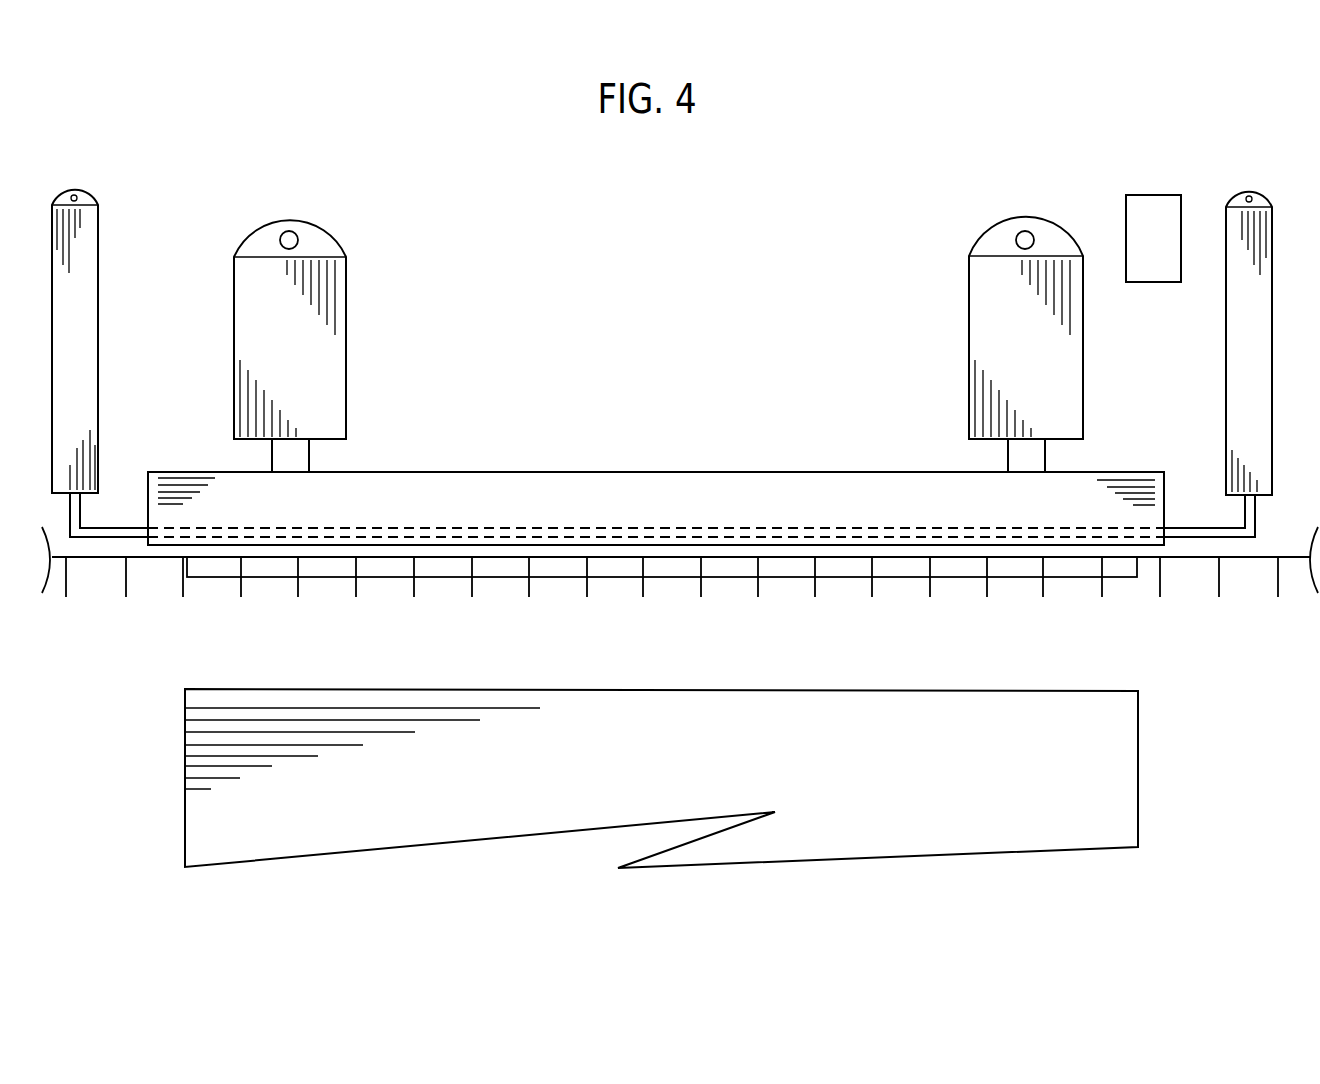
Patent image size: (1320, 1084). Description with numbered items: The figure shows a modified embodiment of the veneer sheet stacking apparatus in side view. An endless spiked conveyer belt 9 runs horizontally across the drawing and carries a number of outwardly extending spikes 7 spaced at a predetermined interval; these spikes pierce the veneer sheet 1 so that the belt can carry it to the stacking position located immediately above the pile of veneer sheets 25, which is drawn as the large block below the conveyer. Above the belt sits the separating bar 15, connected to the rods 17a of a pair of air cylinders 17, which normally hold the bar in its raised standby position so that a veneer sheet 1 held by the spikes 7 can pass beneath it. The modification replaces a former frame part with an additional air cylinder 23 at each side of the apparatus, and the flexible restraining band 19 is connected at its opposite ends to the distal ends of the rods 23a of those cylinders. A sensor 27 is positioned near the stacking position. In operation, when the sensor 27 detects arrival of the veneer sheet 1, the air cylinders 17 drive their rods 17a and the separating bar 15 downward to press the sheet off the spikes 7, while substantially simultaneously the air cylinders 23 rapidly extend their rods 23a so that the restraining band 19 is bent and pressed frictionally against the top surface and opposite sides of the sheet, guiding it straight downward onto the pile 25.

The veneer sheet 1 is at (288, 568).
The spikes 7 is at (1102, 592).
The endless spiked conveyer belt 9 is at (85, 558).
The separating bar 15 is at (798, 505).
The air cylinder 17 is at (307, 355).
The rod 17a is at (288, 452).
The flexible restraining band 19 is at (1223, 537).
The air cylinder 23 is at (83, 283).
The rod 23a is at (77, 518).
The pile of veneer sheets 25 is at (315, 803).
The sensor 27 is at (1155, 223).